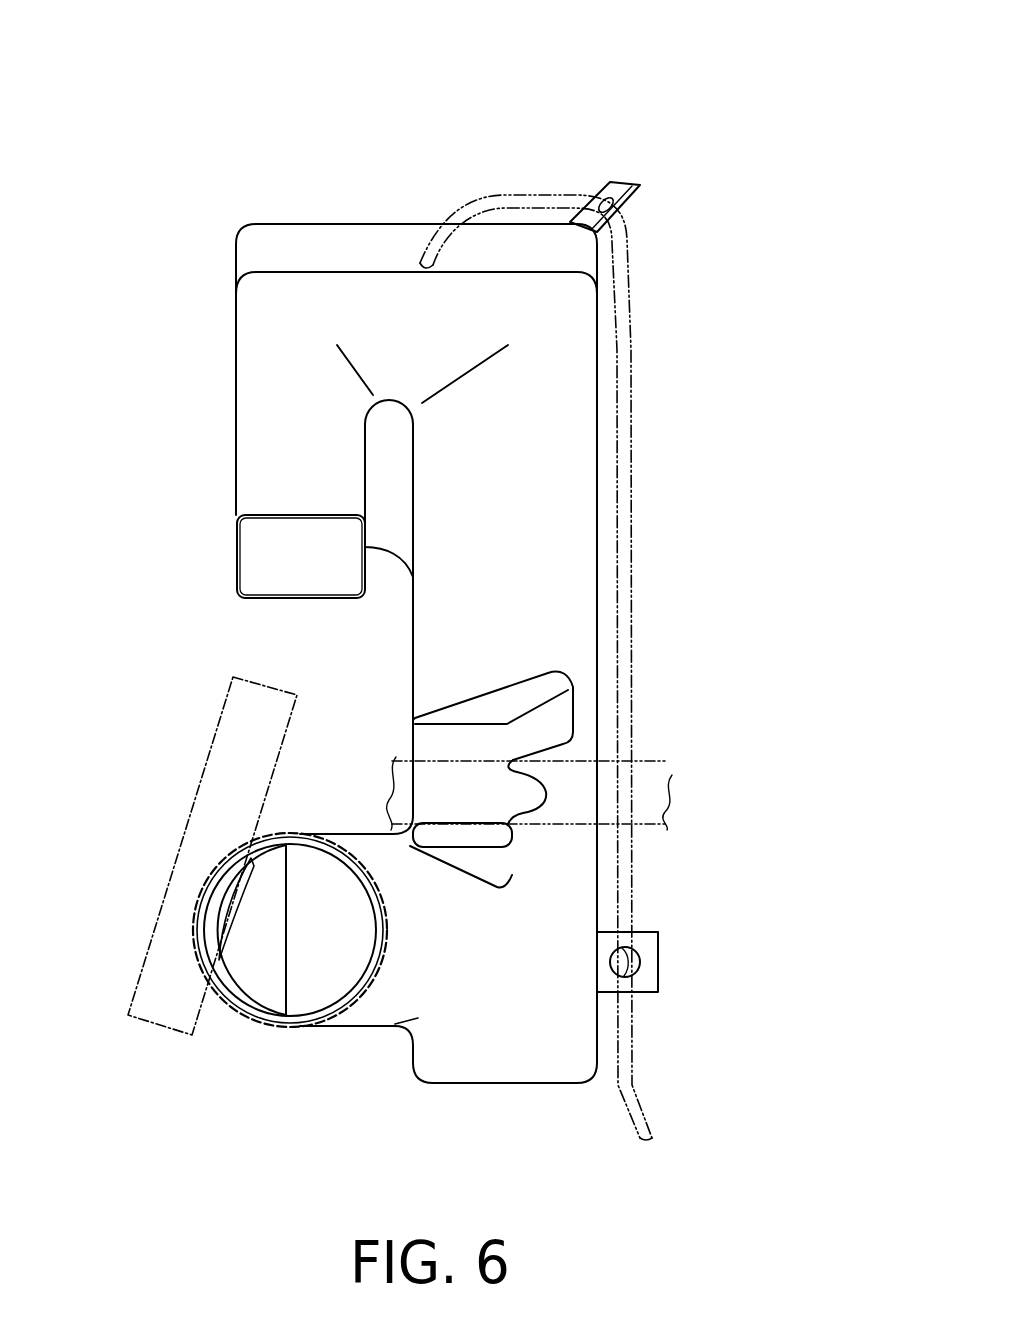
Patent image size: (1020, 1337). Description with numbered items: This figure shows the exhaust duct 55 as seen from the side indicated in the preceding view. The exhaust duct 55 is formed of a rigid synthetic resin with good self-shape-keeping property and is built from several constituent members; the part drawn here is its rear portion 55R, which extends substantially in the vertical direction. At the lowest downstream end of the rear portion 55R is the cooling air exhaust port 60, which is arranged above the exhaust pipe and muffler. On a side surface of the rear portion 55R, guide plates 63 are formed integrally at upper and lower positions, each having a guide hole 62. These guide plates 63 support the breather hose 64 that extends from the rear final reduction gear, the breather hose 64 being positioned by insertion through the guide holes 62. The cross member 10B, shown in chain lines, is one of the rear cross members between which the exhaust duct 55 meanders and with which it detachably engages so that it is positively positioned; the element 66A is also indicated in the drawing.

The exhaust duct 55 is at (444, 97).
The rear portion 55R is at (313, 232).
The cooling air exhaust port 60 is at (257, 560).
The guide hole 62 is at (592, 200).
The guide plate 63 is at (643, 196).
The breather hose 64 is at (625, 268).
The drive shaft coupling 66A is at (206, 806).
The cross member 10B is at (672, 775).